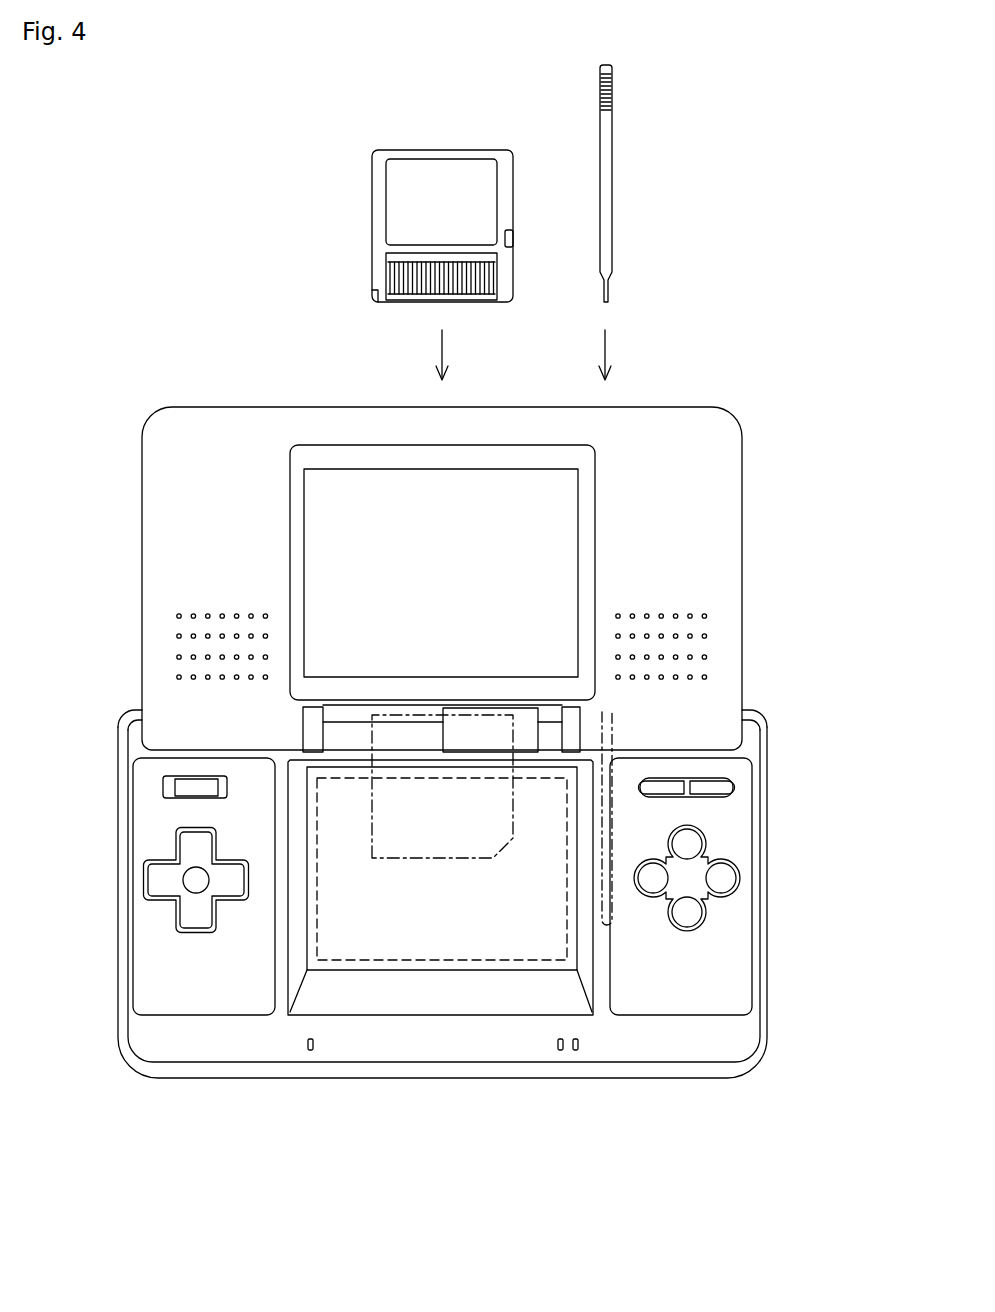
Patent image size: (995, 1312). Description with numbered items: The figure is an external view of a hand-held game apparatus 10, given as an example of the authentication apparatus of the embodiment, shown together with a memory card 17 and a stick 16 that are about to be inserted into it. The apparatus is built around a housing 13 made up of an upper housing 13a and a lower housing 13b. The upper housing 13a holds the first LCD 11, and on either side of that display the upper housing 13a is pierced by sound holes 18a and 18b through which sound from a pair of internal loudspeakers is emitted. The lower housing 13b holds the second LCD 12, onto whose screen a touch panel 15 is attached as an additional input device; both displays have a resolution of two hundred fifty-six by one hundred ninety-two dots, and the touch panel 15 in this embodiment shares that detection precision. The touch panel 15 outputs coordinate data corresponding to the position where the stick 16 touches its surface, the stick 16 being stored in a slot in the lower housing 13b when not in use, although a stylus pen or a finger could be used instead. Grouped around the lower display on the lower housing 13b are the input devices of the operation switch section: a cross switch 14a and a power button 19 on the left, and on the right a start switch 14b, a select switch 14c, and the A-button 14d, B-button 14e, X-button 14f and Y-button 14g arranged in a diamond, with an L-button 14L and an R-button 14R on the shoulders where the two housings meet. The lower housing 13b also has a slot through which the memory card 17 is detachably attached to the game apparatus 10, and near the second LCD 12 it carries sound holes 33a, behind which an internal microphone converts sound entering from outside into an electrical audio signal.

The game apparatus 10 is at (166, 209).
The first LCD 11 is at (326, 494).
The second LCD 12 is at (484, 972).
The housing 13 is at (722, 405).
The upper housing 13a is at (712, 552).
The lower housing 13b is at (145, 977).
The cross switch 14a is at (146, 878).
The start switch 14b is at (733, 797).
The select switch 14c is at (688, 776).
The A-button 14d is at (741, 878).
The B-button 14e is at (703, 913).
The X-button 14f is at (703, 847).
The Y-button 14g is at (651, 894).
The L-button 14L is at (118, 725).
The R-button 14R is at (745, 722).
The touch panel 15 is at (340, 964).
The stick 16 is at (612, 113).
The memory card 17 is at (477, 150).
The sound hole 18a is at (180, 655).
The sound hole 18b is at (704, 616).
The power button 19 is at (172, 790).
The sound holes 33a is at (306, 1044).